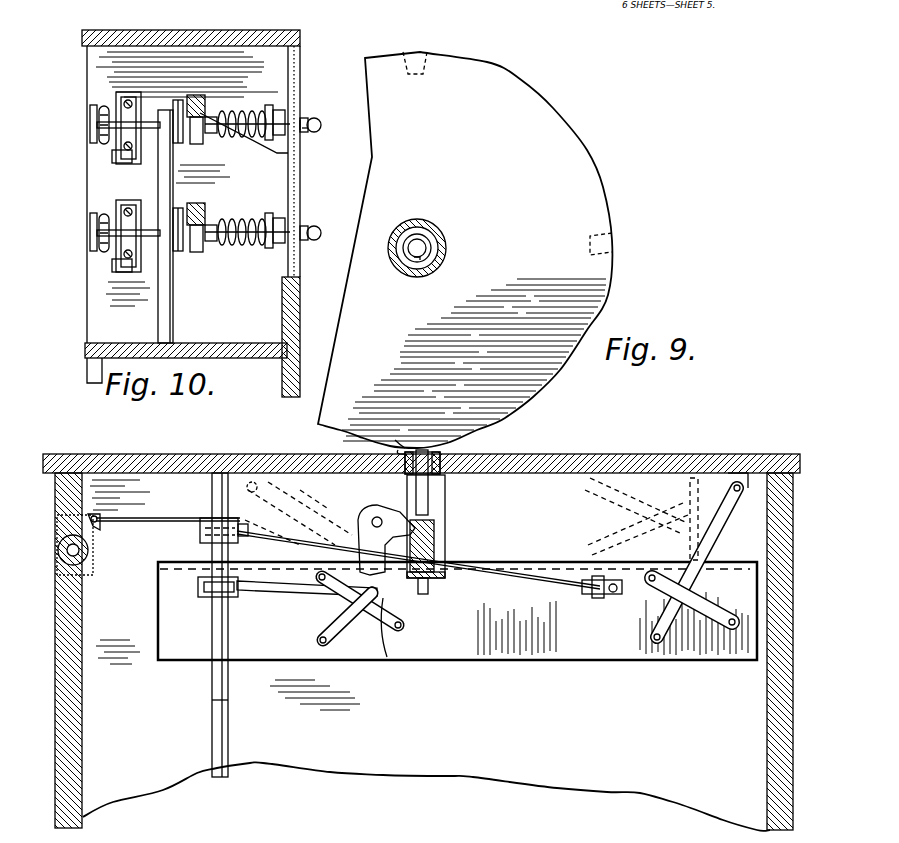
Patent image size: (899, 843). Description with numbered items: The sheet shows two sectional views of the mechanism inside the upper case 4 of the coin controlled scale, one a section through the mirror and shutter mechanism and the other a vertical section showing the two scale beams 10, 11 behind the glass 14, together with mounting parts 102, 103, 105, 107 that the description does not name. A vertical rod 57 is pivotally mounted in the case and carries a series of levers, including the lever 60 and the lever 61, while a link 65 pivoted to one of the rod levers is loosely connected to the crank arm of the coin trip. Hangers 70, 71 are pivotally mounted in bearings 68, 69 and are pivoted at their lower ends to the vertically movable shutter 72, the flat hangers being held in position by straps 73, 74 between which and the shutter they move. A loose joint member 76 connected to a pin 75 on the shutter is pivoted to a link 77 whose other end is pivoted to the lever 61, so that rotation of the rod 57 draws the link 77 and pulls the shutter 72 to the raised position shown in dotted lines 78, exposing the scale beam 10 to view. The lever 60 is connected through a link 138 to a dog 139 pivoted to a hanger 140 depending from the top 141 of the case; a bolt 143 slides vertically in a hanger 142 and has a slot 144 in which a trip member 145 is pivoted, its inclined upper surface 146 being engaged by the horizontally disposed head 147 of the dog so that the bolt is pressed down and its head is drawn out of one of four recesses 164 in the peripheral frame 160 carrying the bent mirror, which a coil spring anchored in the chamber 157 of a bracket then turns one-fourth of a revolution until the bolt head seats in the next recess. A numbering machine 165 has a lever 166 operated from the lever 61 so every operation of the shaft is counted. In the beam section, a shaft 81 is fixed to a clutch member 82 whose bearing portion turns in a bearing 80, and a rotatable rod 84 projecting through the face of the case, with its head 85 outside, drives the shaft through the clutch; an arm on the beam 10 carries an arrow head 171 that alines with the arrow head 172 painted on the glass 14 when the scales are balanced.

In FIG. 9, the upper case 4 is at (118, 455).
In FIG. 10, the scale beam 10 is at (210, 130).
In FIG. 10, the scale beam 11 is at (195, 207).
In FIG. 10, the glass 14 is at (297, 163).
In FIG. 9, the vertical rod 57 is at (212, 705).
In FIG. 9, the lever 60 is at (205, 598).
In FIG. 9, the lever 61 is at (218, 495).
In FIG. 9, the link 65 is at (145, 516).
In FIG. 9, the bearing 68 is at (733, 452).
In FIG. 9, the bearing 69 is at (395, 440).
In FIG. 9, the hanger 70 is at (708, 543).
In FIG. 9, the hanger 71 is at (340, 630).
In FIG. 9, the shutter 72 is at (490, 655).
In FIG. 9, the strap 73 is at (706, 655).
In FIG. 9, the strap 74 is at (385, 640).
In FIG. 9, the pin 75 is at (632, 640).
In FIG. 9, the loose joint member 76 is at (587, 638).
In FIG. 9, the link 77 is at (525, 648).
In FIG. 9, the raised shutter position 78 is at (690, 455).
In FIG. 10, the bearing 80 is at (163, 307).
In FIG. 10, the shaft 81 is at (143, 137).
In FIG. 10, the clutch member 82 is at (168, 147).
In FIG. 10, the rotatable rod 84 is at (257, 132).
In FIG. 10, the head 85 is at (318, 112).
In FIG. 10, the bracket 102 is at (118, 95).
In FIG. 10, the screw 103 is at (128, 146).
In FIG. 10, the screw 105 is at (128, 100).
In FIG. 10, the plate 107 is at (125, 162).
In FIG. 9, the link 138 is at (302, 593).
In FIG. 9, the dog 139 is at (400, 605).
In FIG. 9, the hanger 140 is at (382, 478).
In FIG. 9, the top 141 is at (540, 468).
In FIG. 9, the hanger 142 is at (440, 525).
In FIG. 9, the bolt 143 is at (435, 487).
In FIG. 9, the slot 144 is at (450, 535).
In FIG. 9, the trip member 145 is at (440, 552).
In FIG. 9, the inclined upper surface 146 is at (375, 503).
In FIG. 9, the head 147 is at (438, 568).
In FIG. 9, the chamber 157 is at (435, 238).
In FIG. 9, the frame 160 is at (465, 250).
In FIG. 9, the recess 164 is at (425, 48).
In FIG. 9, the numbering machine 165 is at (70, 557).
In FIG. 9, the lever 166 is at (98, 526).
In FIG. 10, the arrow head 171 is at (296, 138).
In FIG. 10, the arrow head 172 is at (296, 128).